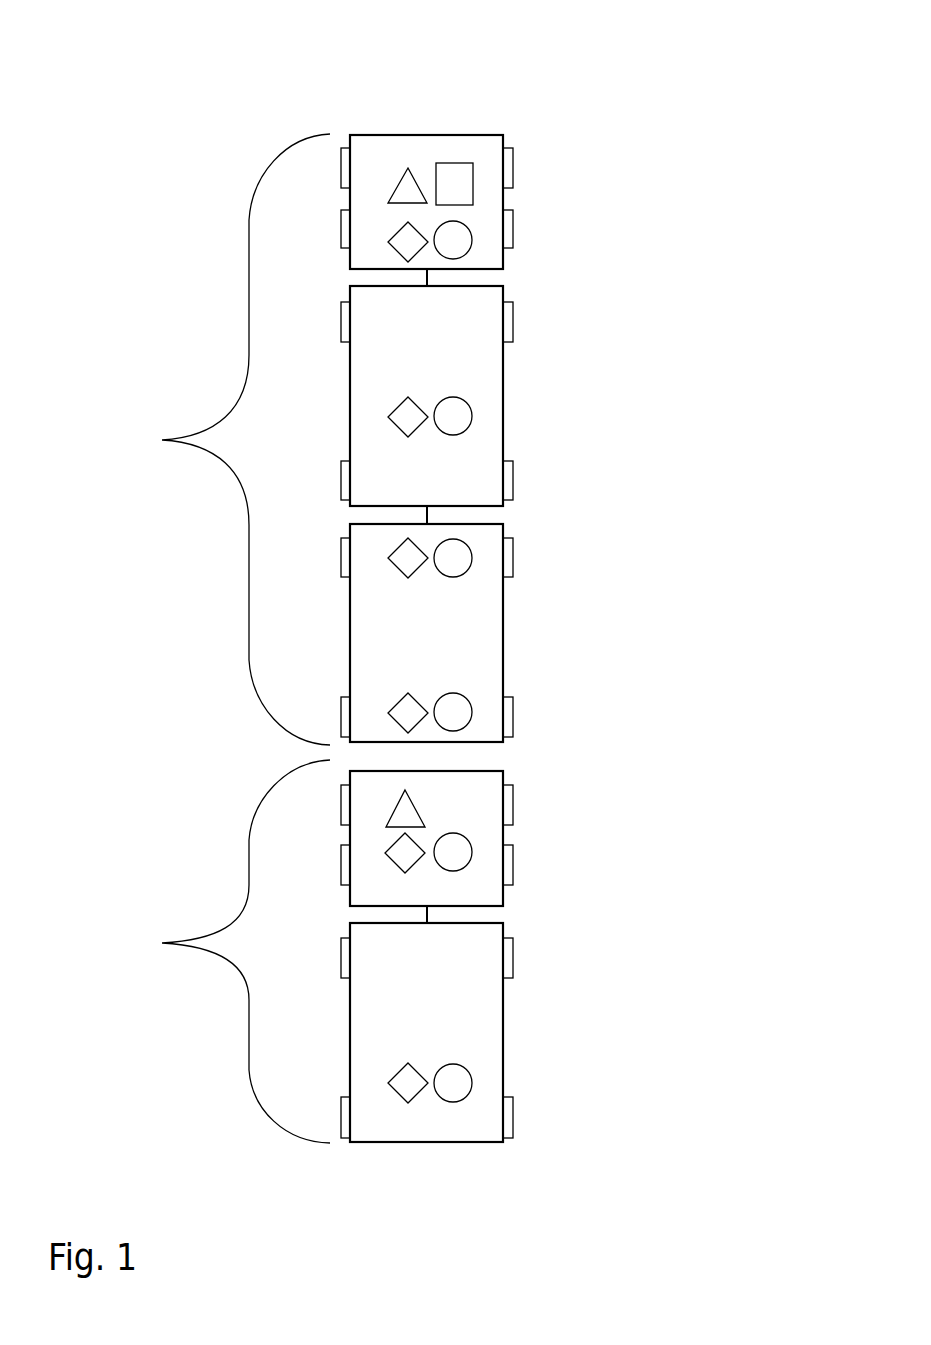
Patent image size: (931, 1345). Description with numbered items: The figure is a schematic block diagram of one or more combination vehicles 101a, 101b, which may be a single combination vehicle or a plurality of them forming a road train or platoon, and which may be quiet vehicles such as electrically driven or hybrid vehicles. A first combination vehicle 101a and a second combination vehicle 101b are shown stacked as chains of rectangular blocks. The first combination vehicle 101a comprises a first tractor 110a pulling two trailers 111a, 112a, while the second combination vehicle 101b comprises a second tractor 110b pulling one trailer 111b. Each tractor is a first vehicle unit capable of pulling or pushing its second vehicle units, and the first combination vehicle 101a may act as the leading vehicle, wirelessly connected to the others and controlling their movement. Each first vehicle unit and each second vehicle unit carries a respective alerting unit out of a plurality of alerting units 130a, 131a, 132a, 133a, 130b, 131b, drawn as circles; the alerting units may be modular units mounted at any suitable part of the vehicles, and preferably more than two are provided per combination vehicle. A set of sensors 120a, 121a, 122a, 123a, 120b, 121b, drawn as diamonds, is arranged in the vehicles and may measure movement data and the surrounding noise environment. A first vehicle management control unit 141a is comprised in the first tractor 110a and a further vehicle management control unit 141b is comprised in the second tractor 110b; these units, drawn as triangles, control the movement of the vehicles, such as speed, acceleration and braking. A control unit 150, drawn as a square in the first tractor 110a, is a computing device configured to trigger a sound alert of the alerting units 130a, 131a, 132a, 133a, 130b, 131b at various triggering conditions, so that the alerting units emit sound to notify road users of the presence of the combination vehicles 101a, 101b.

The first combination vehicle 101a is at (214, 439).
The second combination vehicle 101b is at (213, 951).
The first tractor 110a is at (503, 202).
The second tractor 110b is at (503, 833).
The trailer 111a is at (503, 380).
The trailer 111b is at (503, 1002).
The trailer 112a is at (503, 657).
The sensor 120a is at (390, 248).
The sensor 120b is at (390, 865).
The sensor 121a is at (390, 427).
The sensor 121b is at (390, 1077).
The sensor 122a is at (390, 565).
The sensor 123a is at (390, 707).
The alerting unit 130a is at (470, 247).
The alerting unit 130b is at (470, 860).
The alerting unit 131a is at (470, 423).
The alerting unit 131b is at (470, 1090).
The alerting unit 132a is at (470, 565).
The alerting unit 133a is at (470, 718).
The first vehicle management control unit 141a is at (400, 181).
The vehicle management control unit 141b is at (395, 810).
The control unit 150 is at (460, 163).